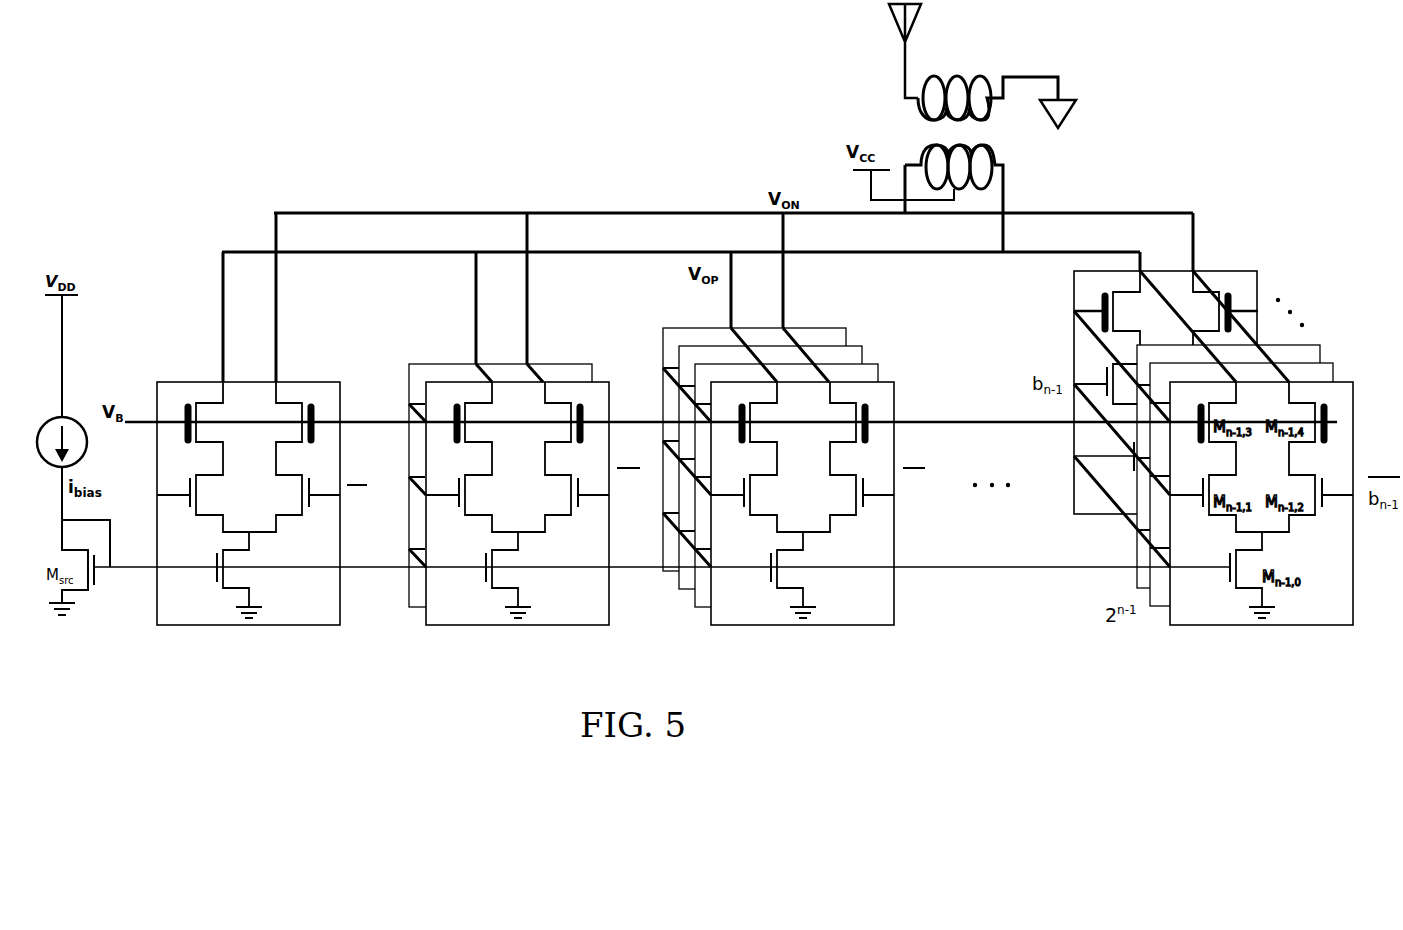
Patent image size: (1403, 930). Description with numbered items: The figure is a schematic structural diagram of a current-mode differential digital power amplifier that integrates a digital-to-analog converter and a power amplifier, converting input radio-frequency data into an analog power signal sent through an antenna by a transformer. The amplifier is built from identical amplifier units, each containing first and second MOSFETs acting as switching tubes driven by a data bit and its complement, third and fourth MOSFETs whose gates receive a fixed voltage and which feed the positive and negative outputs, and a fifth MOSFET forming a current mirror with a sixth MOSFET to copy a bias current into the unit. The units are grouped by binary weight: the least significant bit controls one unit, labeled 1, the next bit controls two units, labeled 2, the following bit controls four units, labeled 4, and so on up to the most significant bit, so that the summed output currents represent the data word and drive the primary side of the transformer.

The unit cell with weight 1 is at (249, 425).
The unit cell with weight 2 is at (513, 424).
The unit cell with weight 4 is at (781, 425).